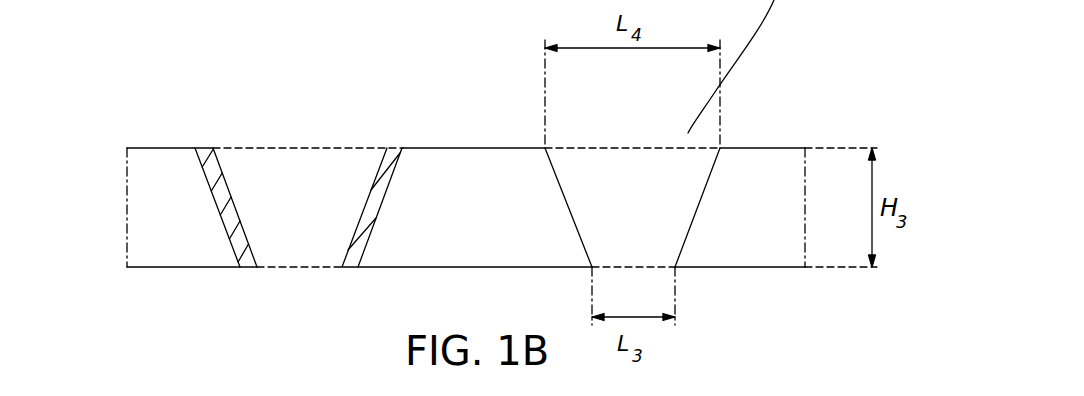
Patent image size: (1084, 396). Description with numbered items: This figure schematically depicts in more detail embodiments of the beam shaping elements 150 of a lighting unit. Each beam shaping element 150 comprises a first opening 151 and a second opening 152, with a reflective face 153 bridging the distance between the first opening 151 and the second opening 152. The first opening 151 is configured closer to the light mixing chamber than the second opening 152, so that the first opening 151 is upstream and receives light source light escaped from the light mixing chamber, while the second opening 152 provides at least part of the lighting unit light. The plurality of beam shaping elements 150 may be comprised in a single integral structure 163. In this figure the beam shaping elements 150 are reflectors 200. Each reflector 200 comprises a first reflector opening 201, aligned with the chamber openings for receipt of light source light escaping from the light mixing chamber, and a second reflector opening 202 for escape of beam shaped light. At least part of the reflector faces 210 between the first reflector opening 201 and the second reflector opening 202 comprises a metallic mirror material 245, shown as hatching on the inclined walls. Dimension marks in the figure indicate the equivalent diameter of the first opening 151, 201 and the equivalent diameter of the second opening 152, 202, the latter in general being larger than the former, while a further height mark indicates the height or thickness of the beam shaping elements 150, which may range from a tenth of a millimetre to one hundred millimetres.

The beam shaping element 150 is at (545, 136).
The reflector 200 is at (334, 110).
The second reflector opening 202 is at (318, 146).
The first reflector opening 201 is at (273, 268).
The reflector face 210 is at (370, 192).
The metallic mirror material 245 is at (215, 187).
The reflective face 153 is at (713, 165).
The second opening 152 is at (696, 148).
The first opening 151 is at (652, 268).
The single integral structure 163 is at (785, 118).